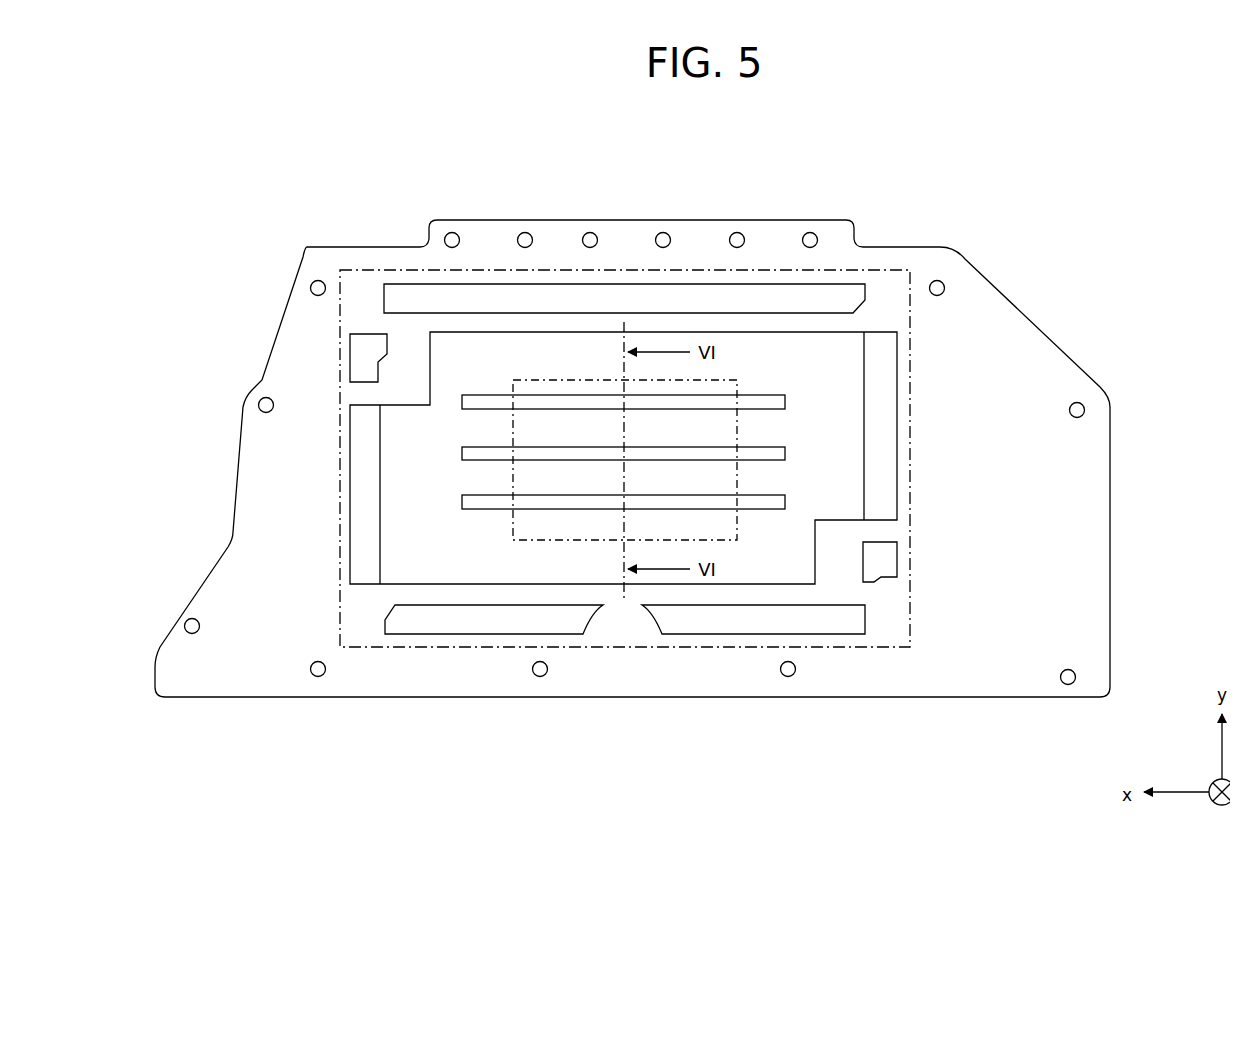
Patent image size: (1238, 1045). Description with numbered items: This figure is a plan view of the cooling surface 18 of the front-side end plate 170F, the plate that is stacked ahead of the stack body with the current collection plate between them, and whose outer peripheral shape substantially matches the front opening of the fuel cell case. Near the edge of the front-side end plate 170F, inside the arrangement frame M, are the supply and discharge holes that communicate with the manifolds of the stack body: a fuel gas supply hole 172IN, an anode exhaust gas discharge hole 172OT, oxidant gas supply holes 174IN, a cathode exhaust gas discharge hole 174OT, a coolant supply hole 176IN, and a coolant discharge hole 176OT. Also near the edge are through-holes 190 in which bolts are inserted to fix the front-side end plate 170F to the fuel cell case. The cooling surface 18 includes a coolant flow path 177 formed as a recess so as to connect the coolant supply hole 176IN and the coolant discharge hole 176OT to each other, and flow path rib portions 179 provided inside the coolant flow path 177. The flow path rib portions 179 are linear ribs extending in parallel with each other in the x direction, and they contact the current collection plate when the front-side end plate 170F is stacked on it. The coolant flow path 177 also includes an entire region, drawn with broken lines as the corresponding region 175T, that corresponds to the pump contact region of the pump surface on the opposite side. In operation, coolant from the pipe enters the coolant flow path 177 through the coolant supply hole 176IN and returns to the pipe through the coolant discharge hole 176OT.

The front-side end plate 170F is at (624, 405).
The cooling surface 18 is at (1005, 318).
The through-holes 190 is at (804, 232).
The cathode exhaust gas discharge hole 174OT is at (843, 296).
The oxidant gas supply holes 174IN is at (407, 625).
The coolant flow path 177 is at (845, 357).
The coolant discharge hole 176OT is at (885, 345).
The coolant supply hole 176IN is at (360, 495).
The fuel gas supply hole 172IN is at (367, 348).
The anode exhaust gas discharge hole 172OT is at (883, 558).
The flow path rib portions 179 is at (780, 400).
The corresponding region 175T is at (733, 490).
The arrangement frame M is at (450, 648).